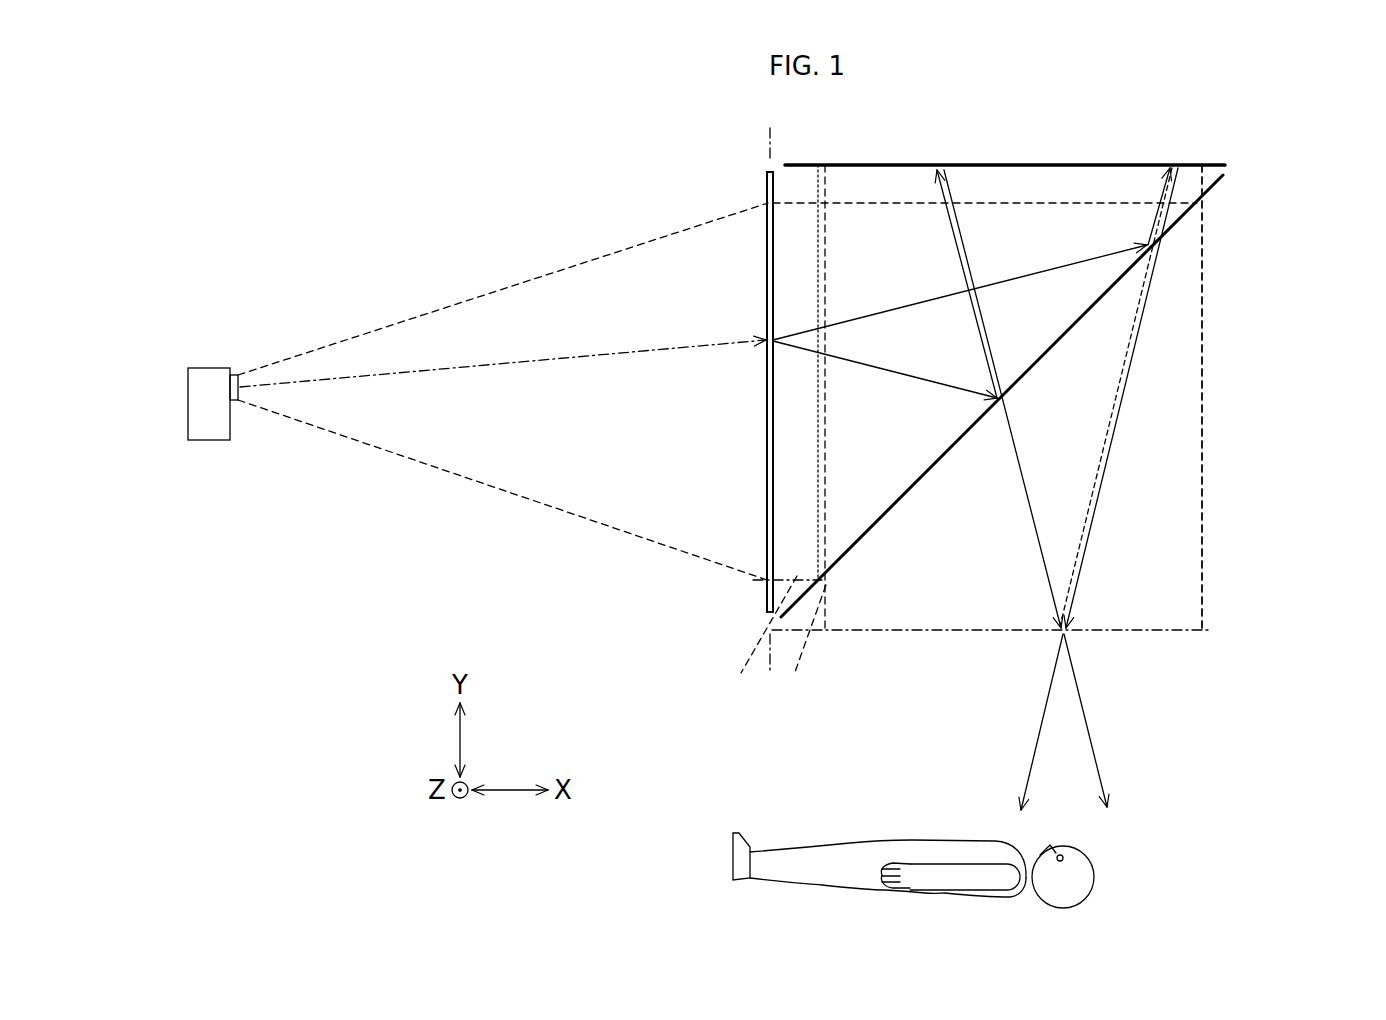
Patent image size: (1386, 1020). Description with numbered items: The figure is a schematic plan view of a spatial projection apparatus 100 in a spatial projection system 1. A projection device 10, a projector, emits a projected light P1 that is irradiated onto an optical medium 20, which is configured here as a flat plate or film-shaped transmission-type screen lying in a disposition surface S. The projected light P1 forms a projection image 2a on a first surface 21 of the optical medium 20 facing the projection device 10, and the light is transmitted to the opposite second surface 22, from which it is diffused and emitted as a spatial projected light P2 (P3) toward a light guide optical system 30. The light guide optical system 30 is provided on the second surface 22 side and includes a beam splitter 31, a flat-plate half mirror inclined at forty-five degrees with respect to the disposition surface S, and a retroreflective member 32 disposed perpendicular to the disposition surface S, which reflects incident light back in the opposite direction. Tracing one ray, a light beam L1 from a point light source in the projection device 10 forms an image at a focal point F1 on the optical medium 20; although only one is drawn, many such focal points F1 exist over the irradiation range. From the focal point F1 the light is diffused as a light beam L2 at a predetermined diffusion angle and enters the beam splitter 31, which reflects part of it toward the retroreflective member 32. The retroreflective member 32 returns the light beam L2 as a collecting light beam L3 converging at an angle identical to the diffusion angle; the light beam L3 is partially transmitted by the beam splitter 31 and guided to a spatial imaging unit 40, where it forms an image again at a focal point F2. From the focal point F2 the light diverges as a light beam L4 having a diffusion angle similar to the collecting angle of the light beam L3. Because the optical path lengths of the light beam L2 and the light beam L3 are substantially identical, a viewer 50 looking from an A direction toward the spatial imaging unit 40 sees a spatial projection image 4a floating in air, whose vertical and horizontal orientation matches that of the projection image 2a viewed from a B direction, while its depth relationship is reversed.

The spatial projection system 1 is at (352, 212).
The spatial projection apparatus 100 is at (352, 257).
The projection device 10 is at (210, 440).
The optical medium 20 is at (767, 493).
The first surface 21 is at (767, 452).
The second surface 22 is at (775, 432).
The projection image 2a is at (765, 204).
The light guide optical system 30 is at (1047, 365).
The beam splitter 31 is at (1217, 185).
The retroreflective member 32 is at (1157, 163).
The spatial imaging unit 40 is at (1010, 630).
The spatial projection image 4a is at (1203, 634).
The viewer 50 is at (1130, 832).
The projected light P1 is at (500, 492).
The spatial projected light P2 is at (755, 642).
The spatial projected light P3 is at (798, 646).
The light beam L1 is at (602, 353).
The light beam L2 is at (1028, 273).
The light beam L3 is at (1125, 393).
The light beam L4 is at (1088, 728).
The focal point F1 is at (764, 339).
The focal point F2 is at (1060, 633).
The disposition surface S is at (767, 385).
The A direction A is at (945, 650).
The B direction B is at (784, 399).